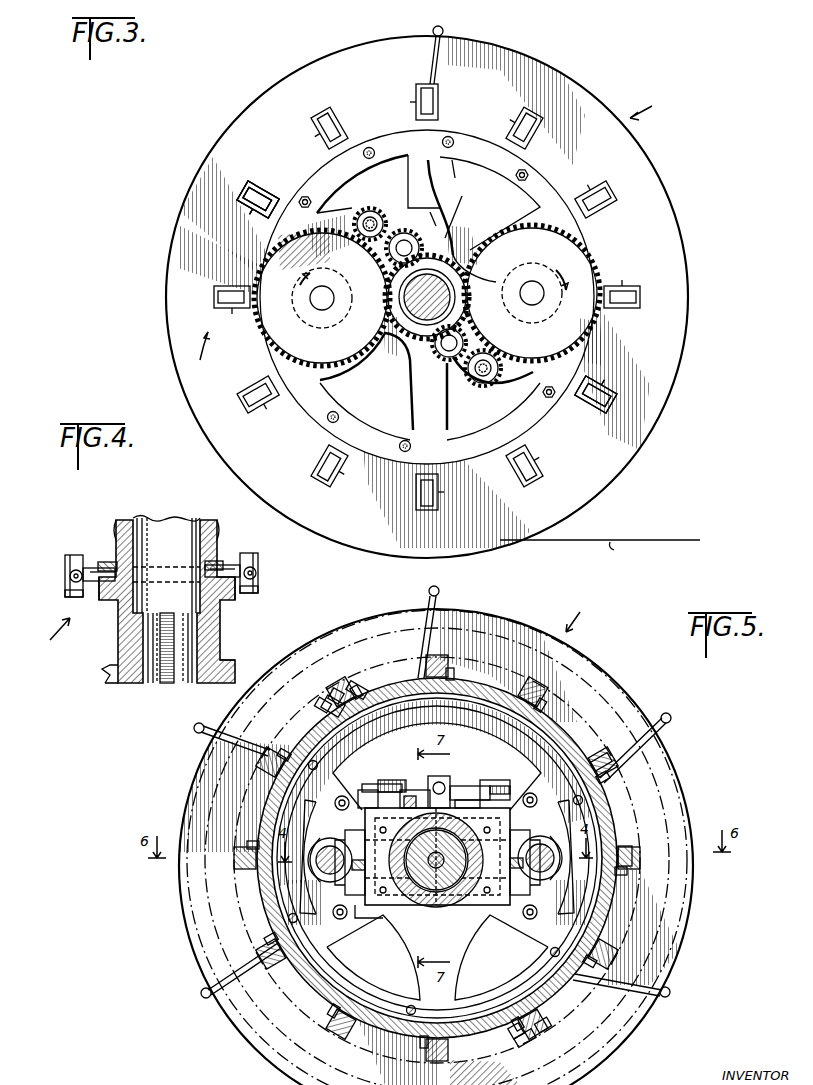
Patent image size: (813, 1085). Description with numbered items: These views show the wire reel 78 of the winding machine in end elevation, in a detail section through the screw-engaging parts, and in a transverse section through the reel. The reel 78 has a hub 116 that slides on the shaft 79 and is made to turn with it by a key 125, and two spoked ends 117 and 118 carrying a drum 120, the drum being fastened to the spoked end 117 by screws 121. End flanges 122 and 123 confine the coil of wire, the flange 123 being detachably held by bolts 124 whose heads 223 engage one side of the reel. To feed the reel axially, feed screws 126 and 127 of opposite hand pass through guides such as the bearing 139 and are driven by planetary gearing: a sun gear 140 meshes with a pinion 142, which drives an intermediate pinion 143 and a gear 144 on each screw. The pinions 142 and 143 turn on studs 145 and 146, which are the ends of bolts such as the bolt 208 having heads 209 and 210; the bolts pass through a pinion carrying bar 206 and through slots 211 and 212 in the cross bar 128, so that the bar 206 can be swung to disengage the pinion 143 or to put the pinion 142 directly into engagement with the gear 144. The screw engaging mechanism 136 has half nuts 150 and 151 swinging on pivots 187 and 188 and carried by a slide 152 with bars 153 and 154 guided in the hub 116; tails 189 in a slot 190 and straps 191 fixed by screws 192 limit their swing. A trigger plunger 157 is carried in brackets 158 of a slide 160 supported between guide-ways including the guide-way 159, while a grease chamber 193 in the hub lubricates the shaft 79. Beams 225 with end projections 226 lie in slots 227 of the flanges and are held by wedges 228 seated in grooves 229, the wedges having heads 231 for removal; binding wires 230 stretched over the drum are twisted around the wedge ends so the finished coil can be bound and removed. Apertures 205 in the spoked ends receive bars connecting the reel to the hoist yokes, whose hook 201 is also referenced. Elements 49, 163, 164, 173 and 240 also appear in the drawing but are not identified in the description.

In FIG. 3, the machine base 49 is at (600, 549).
In FIG. 3, the reel 78 is at (649, 108).
In FIG. 5, the reel 78 is at (436, 840).
In FIG. 3, the shaft 79 is at (474, 250).
In FIG. 5, the shaft 79 is at (420, 880).
In FIG. 4, the hub portion 116 is at (116, 651).
In FIG. 5, the hub portion 116 is at (470, 910).
In FIG. 3, the spoked end 117 is at (412, 404).
In FIG. 4, the spoked end 117 is at (232, 664).
In FIG. 5, the spoked end 118 is at (425, 985).
In FIG. 5, the drum 120 is at (606, 811).
In FIG. 3, the screws 121 is at (369, 146).
In FIG. 3, the end flange 122 is at (688, 250).
In FIG. 5, the end flange 123 is at (680, 792).
In FIG. 3, the bolts 124 is at (452, 145).
In FIG. 5, the bolts 124 is at (440, 686).
In FIG. 5, the key 125 is at (445, 908).
In FIG. 3, the feed screw 126 is at (322, 310).
In FIG. 5, the feed screw 126 is at (325, 868).
In FIG. 3, the feed screw 127 is at (535, 305).
In FIG. 5, the feed screw 127 is at (550, 862).
In FIG. 3, the cross bar 128 is at (455, 240).
In FIG. 4, the screw engaging mechanism 136 is at (48, 633).
In FIG. 5, the screw engaging mechanism 136 is at (409, 779).
In FIG. 5, the bearing 139 is at (320, 880).
In FIG. 3, the sun gear 140 is at (366, 381).
In FIG. 3, the pinion 142 is at (405, 235).
In FIG. 3, the intermediate pinion 143 is at (374, 202).
In FIG. 3, the gear 144 is at (588, 265).
In FIG. 3, the stud 145 is at (426, 181).
In FIG. 3, the stud 146 is at (462, 169).
In FIG. 4, the half nut 150 is at (66, 597).
In FIG. 5, the half nut 150 is at (348, 931).
In FIG. 4, the screw engaging element 151 is at (257, 592).
In FIG. 5, the screw engaging element 151 is at (536, 913).
In FIG. 5, the slide 152 is at (357, 800).
In FIG. 5, the bar 153 is at (500, 782).
In FIG. 4, the bar 154 is at (166, 587).
In FIG. 5, the bar 154 is at (495, 906).
In FIG. 5, the plunger 157 is at (437, 780).
In FIG. 5, the brackets 158 is at (458, 786).
In FIG. 5, the guide-way 159 is at (467, 805).
In FIG. 5, the slide 160 is at (408, 796).
In FIG. 5, the pad 163 is at (395, 780).
In FIG. 5, the strip 164 is at (370, 786).
In FIG. 5, the pad 173 is at (498, 776).
In FIG. 4, the pivot 187 is at (66, 578).
In FIG. 5, the pivot 187 is at (338, 800).
In FIG. 4, the pivot 188 is at (258, 574).
In FIG. 5, the pivot 188 is at (534, 797).
In FIG. 4, the tails 189 is at (99, 596).
In FIG. 4, the slot 190 is at (116, 531).
In FIG. 4, the straps 191 is at (106, 559).
In FIG. 5, the straps 191 is at (366, 905).
In FIG. 5, the screws 192 is at (372, 936).
In FIG. 4, the grease chamber 193 is at (168, 520).
In FIG. 3, the hook 201 is at (380, 214).
In FIG. 3, the apertures 205 is at (525, 200).
In FIG. 3, the pinion carrying bar 206 is at (405, 297).
In FIG. 3, the bolt 208 is at (430, 207).
In FIG. 3, the head 209 is at (360, 262).
In FIG. 3, the head 210 is at (462, 208).
In FIG. 3, the slot 211 is at (362, 186).
In FIG. 3, the slot 212 is at (403, 297).
In FIG. 3, the heads 223 is at (450, 136).
In FIG. 3, the beams 225 is at (318, 119).
In FIG. 5, the beams 225 is at (318, 706).
In FIG. 5, the projections 226 is at (333, 690).
In FIG. 3, the slots 227 is at (322, 142).
In FIG. 5, the slots 227 is at (356, 700).
In FIG. 3, the wedges 228 is at (336, 118).
In FIG. 5, the wedges 228 is at (318, 702).
In FIG. 3, the grooves 229 is at (600, 206).
In FIG. 5, the grooves 229 is at (360, 690).
In FIG. 3, the binding wires 230 is at (434, 60).
In FIG. 5, the binding wires 230 is at (430, 628).
In FIG. 3, the heads 231 is at (224, 300).
In FIG. 3, the pinion pin 240 is at (490, 385).